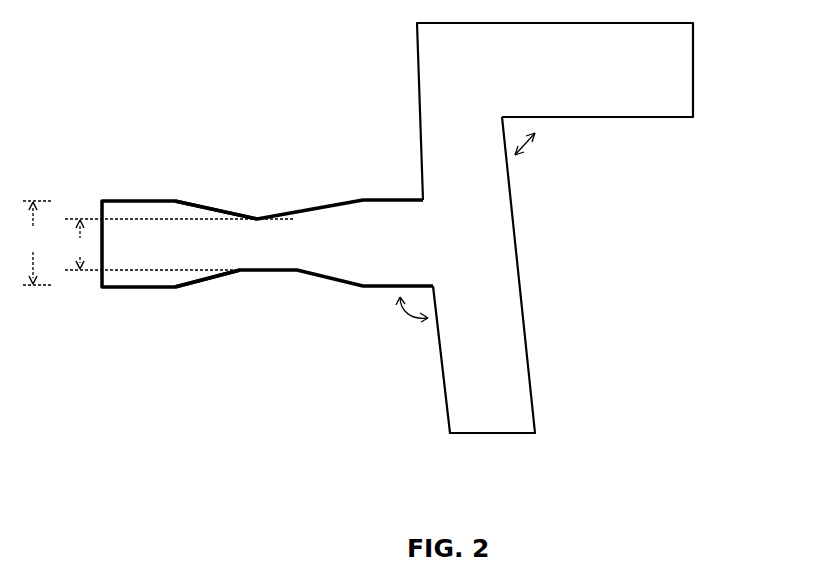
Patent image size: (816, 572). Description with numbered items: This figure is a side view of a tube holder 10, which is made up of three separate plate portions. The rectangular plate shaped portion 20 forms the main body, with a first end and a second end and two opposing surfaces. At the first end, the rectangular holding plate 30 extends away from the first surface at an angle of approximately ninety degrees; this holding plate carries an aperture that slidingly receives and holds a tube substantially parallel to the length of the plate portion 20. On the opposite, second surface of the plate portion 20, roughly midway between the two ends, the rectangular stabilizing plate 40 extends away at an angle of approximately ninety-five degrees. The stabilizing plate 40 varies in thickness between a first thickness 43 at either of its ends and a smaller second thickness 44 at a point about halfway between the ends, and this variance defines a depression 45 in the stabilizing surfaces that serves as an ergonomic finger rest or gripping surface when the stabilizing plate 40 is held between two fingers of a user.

The tube holder 10 is at (236, 85).
The rectangular plate shaped portion 20 is at (503, 390).
The rectangular holding plate 30 is at (660, 108).
The rectangular stabilizing plate 40 is at (120, 259).
The first thickness 43 is at (37, 243).
The second thickness 44 is at (182, 244).
The depression 45 is at (268, 218).